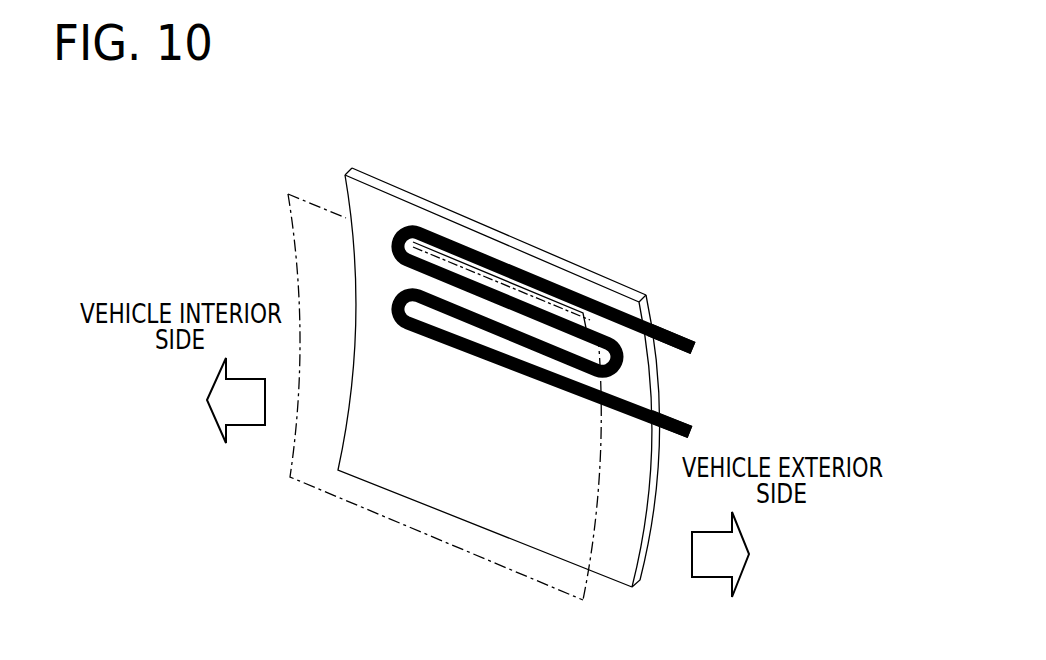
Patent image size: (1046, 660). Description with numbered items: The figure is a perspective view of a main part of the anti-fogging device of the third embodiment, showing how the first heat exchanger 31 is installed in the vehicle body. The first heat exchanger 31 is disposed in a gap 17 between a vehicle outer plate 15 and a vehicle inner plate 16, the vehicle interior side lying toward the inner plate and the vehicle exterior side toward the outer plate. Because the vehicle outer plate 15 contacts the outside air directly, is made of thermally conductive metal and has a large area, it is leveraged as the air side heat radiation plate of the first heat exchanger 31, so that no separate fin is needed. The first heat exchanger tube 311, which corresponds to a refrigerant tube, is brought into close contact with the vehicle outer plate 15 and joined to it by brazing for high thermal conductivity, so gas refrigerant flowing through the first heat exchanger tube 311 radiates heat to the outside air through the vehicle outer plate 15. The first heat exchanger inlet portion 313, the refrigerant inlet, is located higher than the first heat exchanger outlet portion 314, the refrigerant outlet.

The vehicle outer plate 15 is at (478, 232).
The vehicle inner plate 16 is at (328, 290).
The gap 17 is at (338, 200).
The first heat exchanger 31 is at (520, 268).
The first heat exchanger tube 311 is at (582, 213).
The first heat exchanger inlet portion 313 is at (680, 330).
The first heat exchanger outlet portion 314 is at (680, 408).